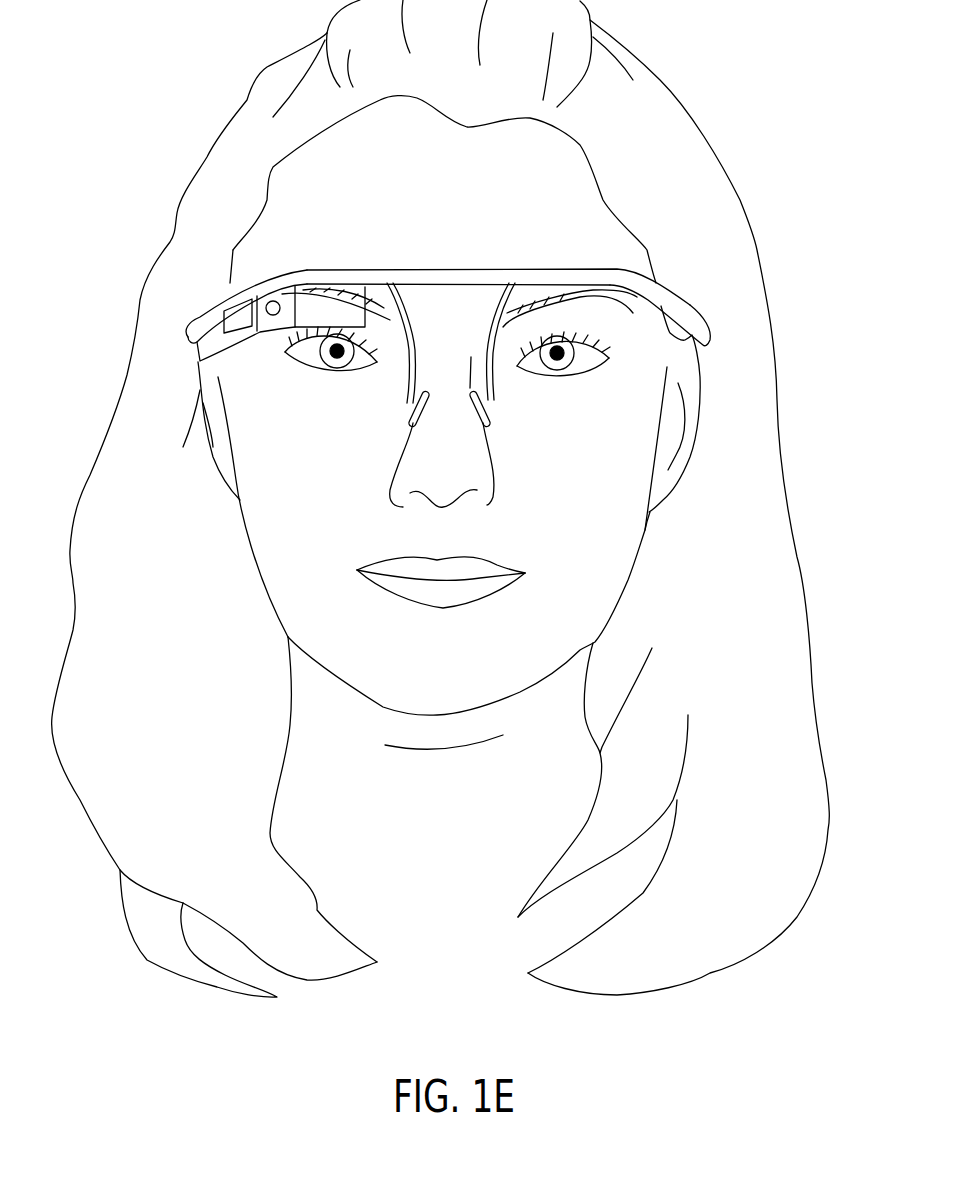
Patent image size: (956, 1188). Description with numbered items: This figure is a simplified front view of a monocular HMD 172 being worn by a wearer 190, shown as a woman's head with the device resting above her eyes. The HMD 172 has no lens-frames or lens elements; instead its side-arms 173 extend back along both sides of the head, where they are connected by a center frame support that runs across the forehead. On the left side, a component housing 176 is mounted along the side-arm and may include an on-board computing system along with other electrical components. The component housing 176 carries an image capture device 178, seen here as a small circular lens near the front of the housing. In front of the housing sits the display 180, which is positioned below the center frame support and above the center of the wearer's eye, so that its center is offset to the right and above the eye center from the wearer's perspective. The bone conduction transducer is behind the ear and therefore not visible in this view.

The wearer 190 is at (749, 150).
The monocular HMD 172 is at (441, 257).
The side-arms 173 is at (206, 304).
The component housing 176 is at (226, 366).
The image capture device 178 is at (261, 296).
The display 180 is at (321, 301).